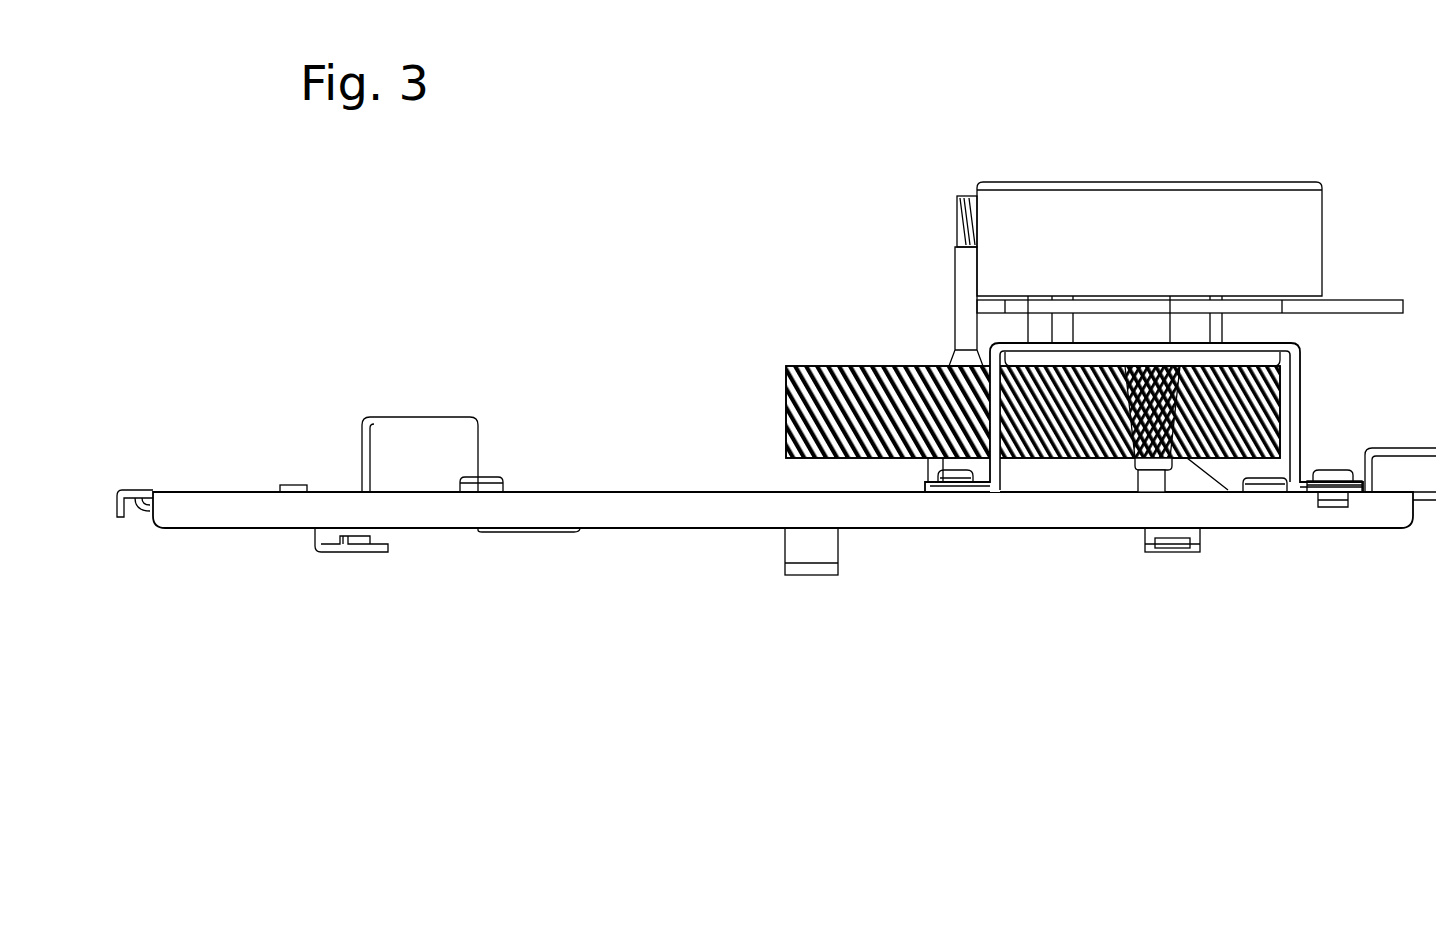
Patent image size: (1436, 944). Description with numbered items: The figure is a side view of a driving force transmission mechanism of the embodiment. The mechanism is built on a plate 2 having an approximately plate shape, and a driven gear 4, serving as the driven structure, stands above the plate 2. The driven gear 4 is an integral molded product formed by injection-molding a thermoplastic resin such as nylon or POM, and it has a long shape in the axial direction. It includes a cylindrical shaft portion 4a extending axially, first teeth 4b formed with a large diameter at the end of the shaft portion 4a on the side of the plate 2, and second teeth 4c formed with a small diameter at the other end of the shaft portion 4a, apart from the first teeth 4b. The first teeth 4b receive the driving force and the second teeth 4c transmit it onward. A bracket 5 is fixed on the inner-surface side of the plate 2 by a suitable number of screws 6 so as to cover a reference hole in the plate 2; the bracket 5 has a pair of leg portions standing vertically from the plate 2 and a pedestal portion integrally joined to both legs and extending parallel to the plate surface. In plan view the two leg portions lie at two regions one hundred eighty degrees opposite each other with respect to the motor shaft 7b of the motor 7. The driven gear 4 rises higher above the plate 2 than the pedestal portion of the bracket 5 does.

The plate 2 is at (600, 503).
The driven gear 4 is at (911, 328).
The shaft portion 4a is at (960, 302).
The first teeth 4b is at (787, 400).
The second teeth 4c is at (958, 212).
The bracket 5 is at (1297, 361).
The screws 6 is at (953, 470).
The motor 7 is at (1156, 200).
The motor shaft 7b is at (1143, 485).